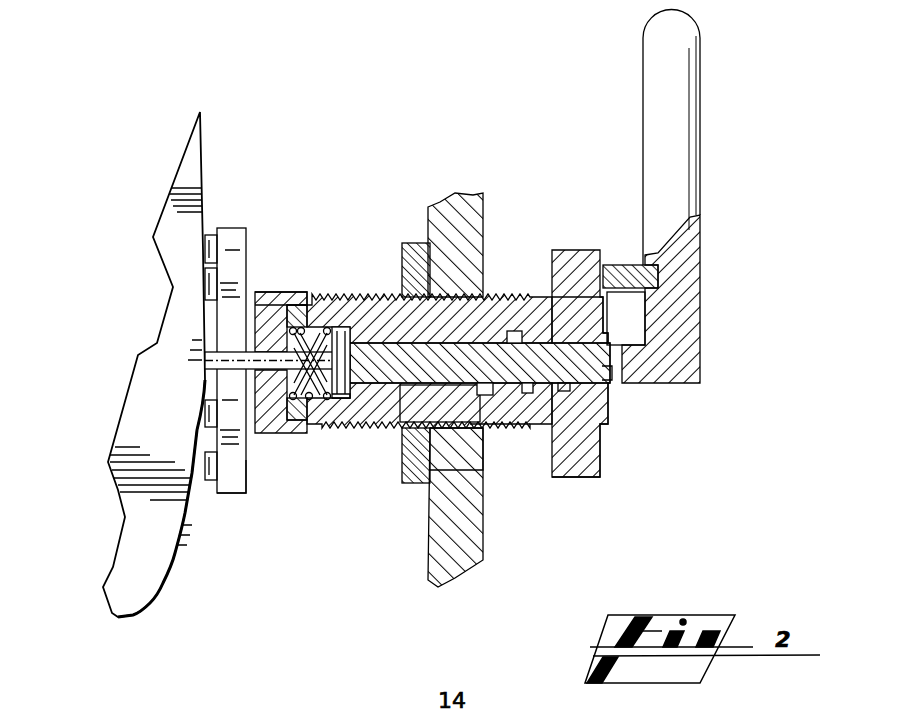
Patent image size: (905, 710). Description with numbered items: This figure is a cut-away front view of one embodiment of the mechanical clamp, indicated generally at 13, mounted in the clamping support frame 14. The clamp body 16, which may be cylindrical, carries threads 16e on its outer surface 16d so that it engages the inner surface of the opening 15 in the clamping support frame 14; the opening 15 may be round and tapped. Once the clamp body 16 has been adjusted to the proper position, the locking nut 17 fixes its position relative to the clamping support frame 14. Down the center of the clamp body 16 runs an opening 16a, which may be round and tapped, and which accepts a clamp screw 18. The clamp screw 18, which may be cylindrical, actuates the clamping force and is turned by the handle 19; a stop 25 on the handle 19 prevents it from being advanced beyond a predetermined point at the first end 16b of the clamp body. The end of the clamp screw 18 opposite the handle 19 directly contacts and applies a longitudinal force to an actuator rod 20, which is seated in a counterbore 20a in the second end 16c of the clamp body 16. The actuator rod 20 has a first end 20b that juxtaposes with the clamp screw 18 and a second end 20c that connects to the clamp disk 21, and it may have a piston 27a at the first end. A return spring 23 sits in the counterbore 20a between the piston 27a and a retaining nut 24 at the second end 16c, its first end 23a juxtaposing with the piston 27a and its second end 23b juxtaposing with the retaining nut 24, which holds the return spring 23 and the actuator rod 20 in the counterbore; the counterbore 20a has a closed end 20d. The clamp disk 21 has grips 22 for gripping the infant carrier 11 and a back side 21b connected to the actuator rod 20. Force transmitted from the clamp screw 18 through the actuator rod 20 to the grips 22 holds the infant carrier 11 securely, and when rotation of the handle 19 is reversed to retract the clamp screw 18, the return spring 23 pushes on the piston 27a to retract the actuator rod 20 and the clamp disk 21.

The infant carrier 11 is at (160, 600).
The mounting assembly 13 is at (797, 333).
The clamping support frame 14 is at (455, 193).
The opening 15 is at (483, 430).
The clamp body 16 is at (590, 478).
The opening 16a is at (608, 342).
The first end 16b is at (605, 406).
The second end 16c is at (263, 434).
The outer surface 16d is at (532, 429).
The threads 16e is at (528, 297).
The locking nut 17 is at (411, 243).
The clamp screw 18 is at (602, 370).
The handle 19 is at (700, 116).
The actuator rod 20 is at (257, 345).
The counterbore 20a is at (318, 426).
The first end 20b is at (388, 406).
The second end 20c is at (250, 369).
The closed end 20d is at (380, 298).
The clamp disk 21 is at (207, 447).
The back side 21b is at (248, 478).
The grips 22 is at (206, 494).
The return spring 23 is at (292, 326).
The first end 23a is at (338, 326).
The second end 23b is at (261, 292).
The retaining nut 24 is at (290, 300).
The stop 25 is at (630, 265).
The piston 27a is at (348, 420).